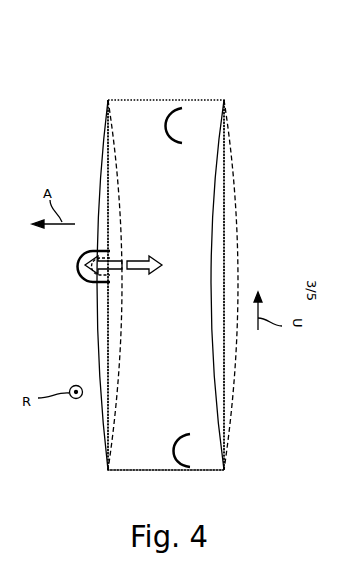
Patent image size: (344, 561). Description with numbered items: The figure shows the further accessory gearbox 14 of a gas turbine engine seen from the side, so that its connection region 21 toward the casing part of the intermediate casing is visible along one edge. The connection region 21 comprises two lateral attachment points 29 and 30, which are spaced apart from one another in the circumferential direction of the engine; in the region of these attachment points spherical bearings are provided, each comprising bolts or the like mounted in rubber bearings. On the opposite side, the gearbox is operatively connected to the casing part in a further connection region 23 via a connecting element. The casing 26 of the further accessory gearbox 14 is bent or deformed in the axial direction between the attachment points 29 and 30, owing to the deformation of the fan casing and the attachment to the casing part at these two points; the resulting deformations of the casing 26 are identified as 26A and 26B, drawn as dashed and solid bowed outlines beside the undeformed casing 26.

The further accessory gearbox 14 is at (130, 92).
The connection region 21 is at (168, 448).
The further connection region 23 is at (72, 286).
The casing 26 is at (222, 205).
The deformation of the casing 26A is at (236, 190).
The deformation of the casing 26B is at (215, 175).
The lateral attachment point 29 is at (172, 97).
The lateral attachment point 30 is at (172, 464).